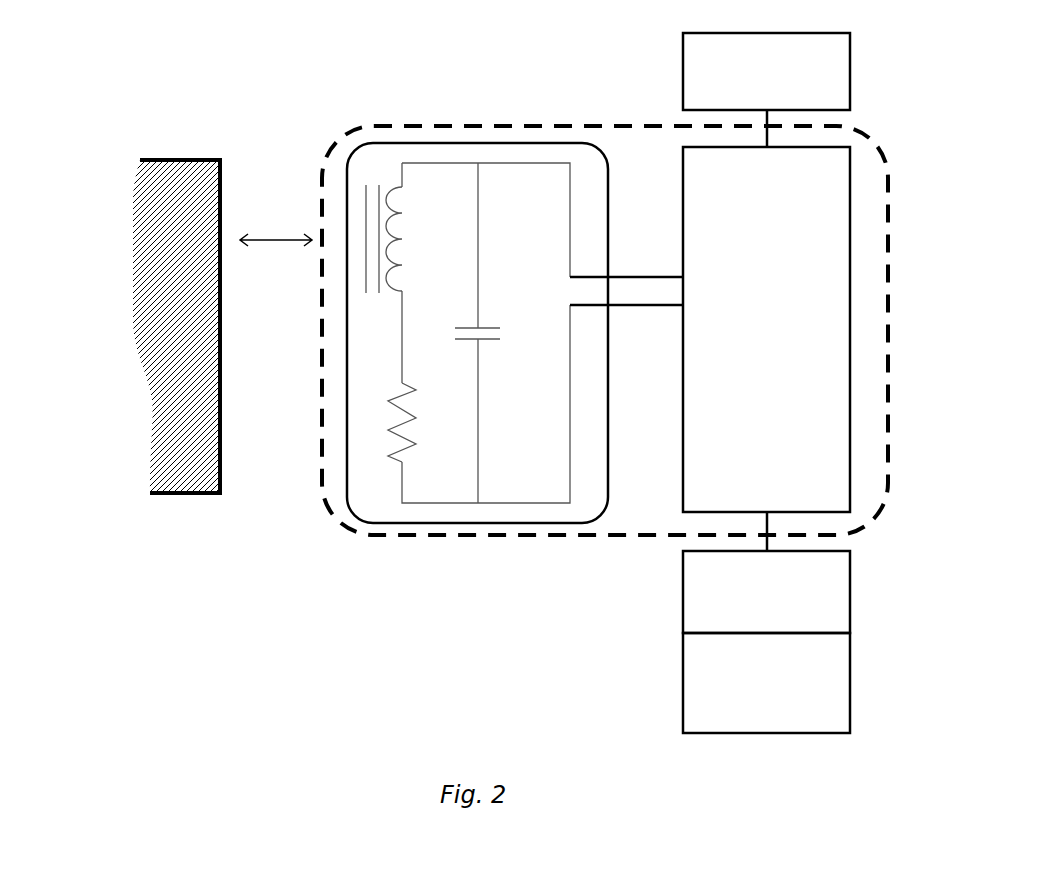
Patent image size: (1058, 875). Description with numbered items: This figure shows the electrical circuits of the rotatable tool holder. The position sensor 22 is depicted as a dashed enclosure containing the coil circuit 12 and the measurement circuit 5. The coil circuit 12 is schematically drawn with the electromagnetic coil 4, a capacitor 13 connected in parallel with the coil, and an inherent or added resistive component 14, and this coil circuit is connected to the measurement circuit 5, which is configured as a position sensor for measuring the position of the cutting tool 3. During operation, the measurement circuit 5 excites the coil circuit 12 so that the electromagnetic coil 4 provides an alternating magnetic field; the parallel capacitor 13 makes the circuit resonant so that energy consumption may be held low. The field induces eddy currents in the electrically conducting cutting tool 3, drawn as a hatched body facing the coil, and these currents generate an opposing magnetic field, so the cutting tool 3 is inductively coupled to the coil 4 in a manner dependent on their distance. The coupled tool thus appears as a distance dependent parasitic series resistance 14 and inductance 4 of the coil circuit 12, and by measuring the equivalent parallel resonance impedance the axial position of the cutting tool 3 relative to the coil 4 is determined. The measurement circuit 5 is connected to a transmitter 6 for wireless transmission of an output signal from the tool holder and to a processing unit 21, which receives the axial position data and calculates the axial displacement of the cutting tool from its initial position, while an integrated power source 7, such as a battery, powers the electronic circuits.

The cutting tool 3 is at (160, 200).
The electromagnetic coil 4 is at (388, 219).
The measurement circuit 5 is at (835, 330).
The transmitter 6 is at (830, 73).
The integrated power source 7 is at (832, 678).
The coil circuit 12 is at (368, 145).
The capacitor 13 is at (455, 333).
The resistive component 14 is at (385, 414).
The processing unit 21 is at (832, 605).
The position sensor 22 is at (372, 127).